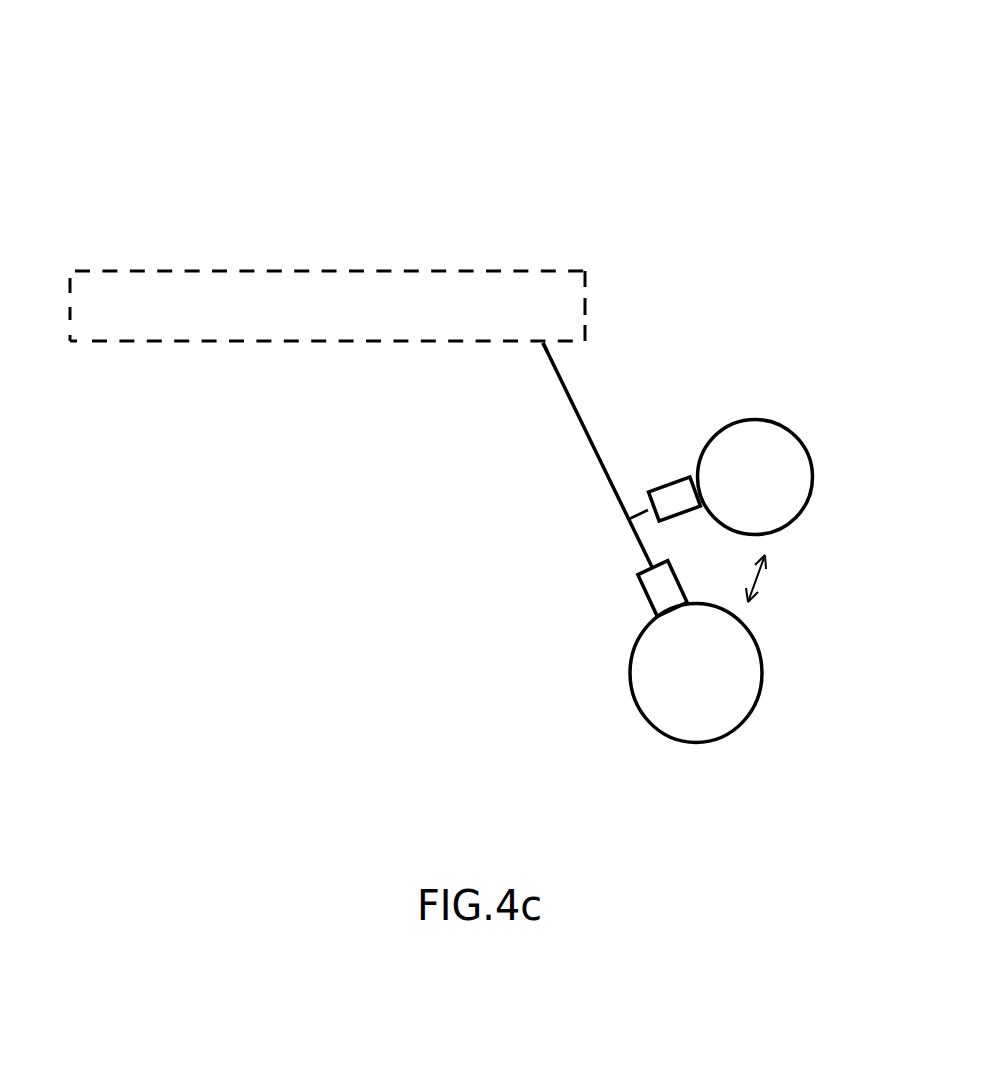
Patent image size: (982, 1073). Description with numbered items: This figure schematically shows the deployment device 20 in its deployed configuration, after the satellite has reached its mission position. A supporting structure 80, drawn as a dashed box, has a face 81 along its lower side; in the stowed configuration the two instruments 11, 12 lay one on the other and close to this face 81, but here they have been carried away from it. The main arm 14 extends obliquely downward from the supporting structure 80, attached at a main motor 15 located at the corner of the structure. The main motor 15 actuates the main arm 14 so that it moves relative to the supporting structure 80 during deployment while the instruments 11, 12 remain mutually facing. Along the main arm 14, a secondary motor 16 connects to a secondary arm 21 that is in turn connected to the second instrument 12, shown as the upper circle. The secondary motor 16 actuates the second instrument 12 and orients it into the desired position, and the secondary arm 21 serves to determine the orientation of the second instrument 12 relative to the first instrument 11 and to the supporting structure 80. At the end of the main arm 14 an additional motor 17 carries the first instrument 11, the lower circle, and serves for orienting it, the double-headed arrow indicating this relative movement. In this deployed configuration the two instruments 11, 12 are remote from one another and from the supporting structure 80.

The deployment device 20 is at (606, 58).
The supporting structure 80 is at (547, 272).
The face 81 is at (125, 342).
The main motor 15 is at (543, 347).
The main arm 14 is at (589, 432).
The secondary motor 16 is at (673, 525).
The secondary arm 21 is at (635, 512).
The second instrument 12 is at (747, 417).
The additional motor 17 is at (650, 607).
The first instrument 11 is at (642, 717).